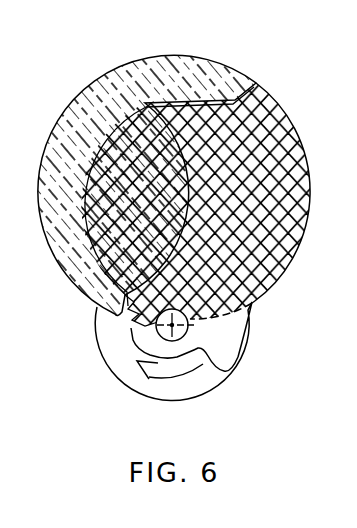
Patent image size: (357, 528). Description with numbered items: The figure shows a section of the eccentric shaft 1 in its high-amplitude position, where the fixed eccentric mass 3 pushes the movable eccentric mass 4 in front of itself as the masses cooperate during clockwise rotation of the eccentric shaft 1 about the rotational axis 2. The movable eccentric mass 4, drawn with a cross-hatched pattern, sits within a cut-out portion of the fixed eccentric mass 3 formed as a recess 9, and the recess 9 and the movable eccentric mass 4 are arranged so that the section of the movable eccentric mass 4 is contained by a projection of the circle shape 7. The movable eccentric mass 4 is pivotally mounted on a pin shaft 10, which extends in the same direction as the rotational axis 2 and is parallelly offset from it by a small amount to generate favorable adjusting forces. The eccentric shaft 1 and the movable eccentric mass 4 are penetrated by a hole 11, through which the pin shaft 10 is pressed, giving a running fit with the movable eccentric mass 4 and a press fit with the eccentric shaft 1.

The eccentric shaft 1 is at (242, 380).
The rotational axis 2 is at (170, 326).
The fixed eccentric mass 3 is at (208, 73).
The movable eccentric mass 4 is at (254, 130).
The circle shape 7 is at (152, 323).
The recess 9 is at (250, 89).
The pin shaft 10 is at (177, 321).
The hole 11 is at (185, 334).